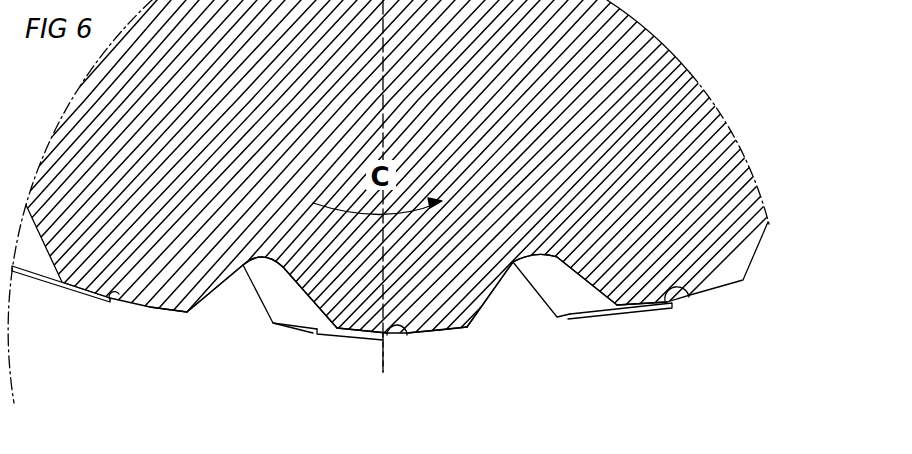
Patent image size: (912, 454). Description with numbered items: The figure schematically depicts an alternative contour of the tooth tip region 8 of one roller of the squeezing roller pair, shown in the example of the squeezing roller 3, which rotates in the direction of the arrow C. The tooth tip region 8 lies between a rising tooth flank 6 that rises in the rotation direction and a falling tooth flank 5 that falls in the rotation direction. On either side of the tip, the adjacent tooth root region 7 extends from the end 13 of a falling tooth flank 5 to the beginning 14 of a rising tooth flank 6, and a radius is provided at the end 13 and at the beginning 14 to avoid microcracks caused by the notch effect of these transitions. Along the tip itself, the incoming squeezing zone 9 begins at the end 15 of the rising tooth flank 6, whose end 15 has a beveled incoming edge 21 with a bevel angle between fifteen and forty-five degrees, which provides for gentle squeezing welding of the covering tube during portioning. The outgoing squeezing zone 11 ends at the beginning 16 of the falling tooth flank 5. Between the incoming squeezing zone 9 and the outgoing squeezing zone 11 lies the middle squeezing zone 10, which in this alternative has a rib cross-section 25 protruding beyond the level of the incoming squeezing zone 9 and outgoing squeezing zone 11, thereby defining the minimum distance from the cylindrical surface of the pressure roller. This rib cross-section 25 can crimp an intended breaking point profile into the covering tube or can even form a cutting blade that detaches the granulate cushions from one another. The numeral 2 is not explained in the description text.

The squeezing roller 3 is at (698, 71).
The beginning of the rising tooth flank 14 is at (242, 251).
The tooth root region 7 is at (266, 255).
The end of the falling tooth flank 13 is at (293, 262).
The falling tooth flank 5 is at (266, 297).
The end of the rising tooth flank 15 is at (343, 327).
The beginning of the falling tooth flank 16 is at (463, 315).
The rib cross-section 25 is at (113, 299).
The rising tooth flank 6 is at (228, 295).
The insert bottom 2 is at (313, 333).
The outgoing squeezing zone 11 is at (357, 337).
The middle squeezing zone 10 is at (385, 340).
The tooth tip region 8 is at (385, 378).
The incoming squeezing zone 9 is at (428, 343).
The beveled incoming edge 21 is at (463, 336).